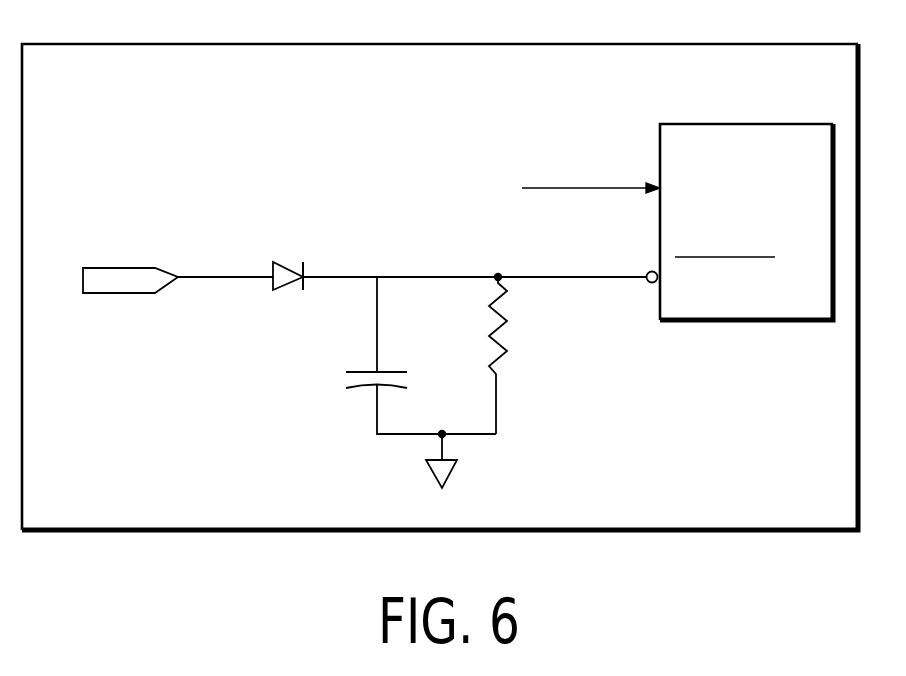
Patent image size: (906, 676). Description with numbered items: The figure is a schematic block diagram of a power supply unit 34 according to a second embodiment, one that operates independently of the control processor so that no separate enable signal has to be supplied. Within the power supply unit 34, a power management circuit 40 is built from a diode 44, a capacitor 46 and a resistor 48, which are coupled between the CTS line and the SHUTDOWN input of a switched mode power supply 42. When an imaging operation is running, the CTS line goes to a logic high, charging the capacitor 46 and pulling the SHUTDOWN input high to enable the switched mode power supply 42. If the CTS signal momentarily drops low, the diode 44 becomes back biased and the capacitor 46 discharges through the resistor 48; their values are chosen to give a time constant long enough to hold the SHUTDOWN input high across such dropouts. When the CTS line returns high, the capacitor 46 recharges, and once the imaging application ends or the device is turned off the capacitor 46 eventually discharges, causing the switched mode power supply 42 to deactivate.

The power supply unit 34 is at (676, 44).
The power management circuit 40 is at (338, 375).
The switched mode power supply 42 is at (762, 124).
The diode 44 is at (291, 294).
The capacitor 46 is at (370, 400).
The resistor 48 is at (519, 355).